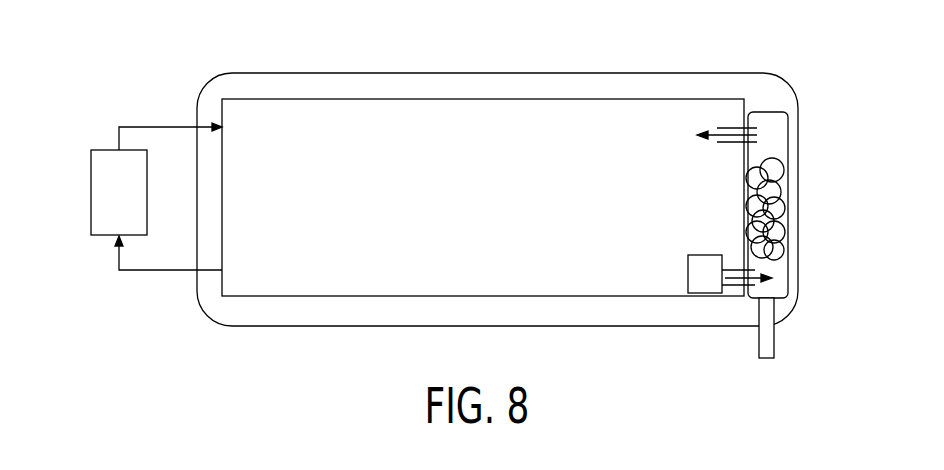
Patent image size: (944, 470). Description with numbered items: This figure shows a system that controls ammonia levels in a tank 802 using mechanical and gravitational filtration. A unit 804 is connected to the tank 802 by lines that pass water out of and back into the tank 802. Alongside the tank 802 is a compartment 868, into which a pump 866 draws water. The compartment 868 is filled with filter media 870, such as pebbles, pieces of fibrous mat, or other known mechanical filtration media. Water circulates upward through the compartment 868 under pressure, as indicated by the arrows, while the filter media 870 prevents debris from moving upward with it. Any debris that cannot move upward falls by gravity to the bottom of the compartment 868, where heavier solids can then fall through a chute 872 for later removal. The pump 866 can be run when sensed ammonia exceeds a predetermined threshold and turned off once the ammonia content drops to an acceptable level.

The tank 802 is at (497, 100).
The external unit 804 is at (91, 193).
The pump 866 is at (687, 272).
The compartment 868 is at (791, 270).
The filter media 870 is at (790, 205).
The chute 872 is at (775, 340).